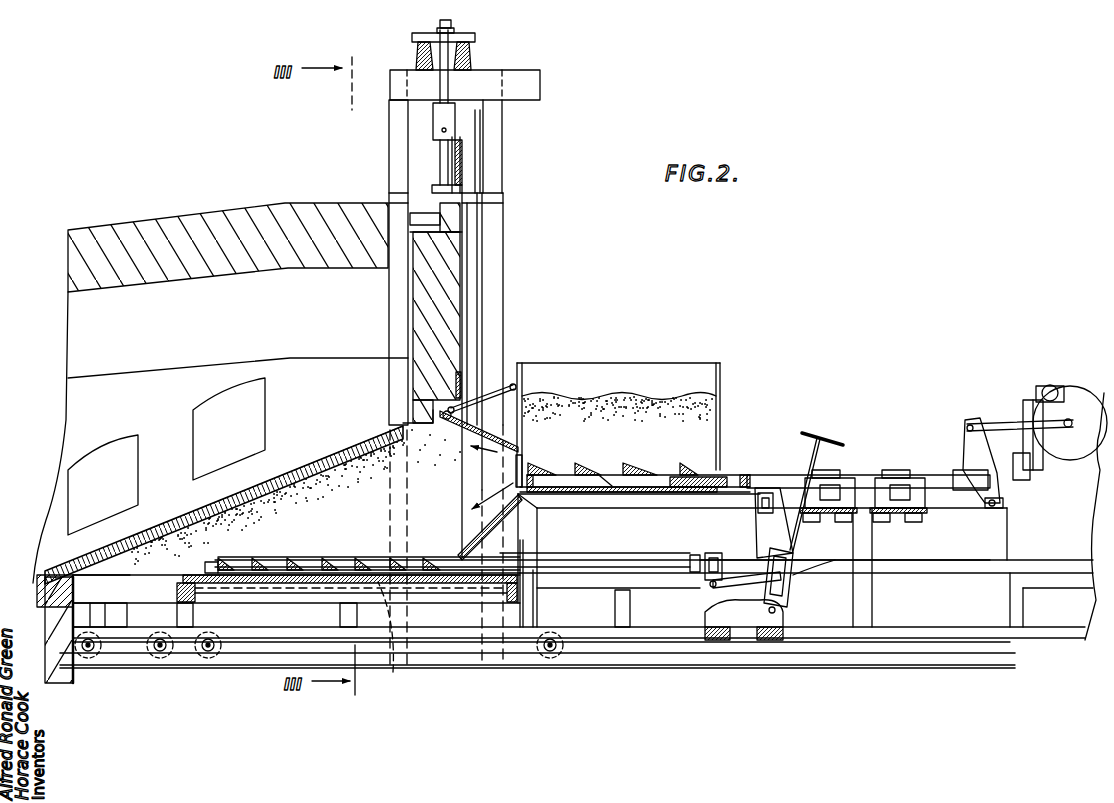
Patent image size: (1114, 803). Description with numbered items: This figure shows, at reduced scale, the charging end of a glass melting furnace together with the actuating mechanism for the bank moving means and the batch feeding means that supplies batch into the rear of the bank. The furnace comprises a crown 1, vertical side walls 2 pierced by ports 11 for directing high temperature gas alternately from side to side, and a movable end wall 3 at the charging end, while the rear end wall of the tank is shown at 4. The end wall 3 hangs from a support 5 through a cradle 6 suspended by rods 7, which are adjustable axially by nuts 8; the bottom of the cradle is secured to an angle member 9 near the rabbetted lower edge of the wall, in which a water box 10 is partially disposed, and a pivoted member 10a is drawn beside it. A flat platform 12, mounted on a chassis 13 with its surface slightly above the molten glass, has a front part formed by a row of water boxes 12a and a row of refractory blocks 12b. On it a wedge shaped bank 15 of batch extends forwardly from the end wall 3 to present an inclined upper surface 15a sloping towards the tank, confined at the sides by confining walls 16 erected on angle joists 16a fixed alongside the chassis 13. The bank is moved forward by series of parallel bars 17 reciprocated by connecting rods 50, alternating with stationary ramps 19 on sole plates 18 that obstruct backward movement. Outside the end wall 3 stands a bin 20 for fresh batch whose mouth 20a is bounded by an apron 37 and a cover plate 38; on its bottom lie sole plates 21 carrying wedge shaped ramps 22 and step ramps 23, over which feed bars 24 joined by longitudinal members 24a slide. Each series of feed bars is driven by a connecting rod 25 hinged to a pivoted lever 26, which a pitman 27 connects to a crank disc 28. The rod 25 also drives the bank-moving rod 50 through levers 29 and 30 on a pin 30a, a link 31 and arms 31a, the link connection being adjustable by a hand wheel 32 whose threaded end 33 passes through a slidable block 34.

The crown 1 is at (200, 268).
The vertical side walls 2 is at (220, 437).
The movable end wall 3 is at (418, 300).
The rear end wall 4 is at (60, 617).
The support 5 is at (498, 70).
The cradle 6 is at (470, 210).
The rods 7 is at (441, 85).
The nuts 8 is at (455, 25).
The angle member 9 is at (458, 386).
The water box 10 is at (450, 438).
The link 10a is at (493, 393).
The ports 11 is at (166, 456).
The platform 12 is at (380, 592).
The water boxes 12a is at (140, 551).
The refractory blocks 12b is at (48, 577).
The chassis 13 is at (292, 635).
The bank 15 is at (296, 497).
The upper surface 15a is at (307, 478).
The confining walls 16 is at (201, 513).
The angle joists 16a is at (393, 637).
The bars 17 is at (222, 562).
The sole plate 18 is at (210, 568).
The stationary ramps 19 is at (256, 562).
The bin 20 is at (618, 425).
The mouth 20a is at (519, 470).
The sole plates 21 is at (614, 494).
The ramp 22 is at (599, 474).
The ramp 23 is at (673, 478).
The feed bars 24 is at (541, 472).
The longitudinal members 24a is at (604, 476).
The connecting rod 25 is at (764, 486).
The pivoted lever 26 is at (967, 448).
The pitman 27 is at (995, 422).
The crank disc 28 is at (1082, 405).
The lever 29 is at (768, 542).
The lever 30 is at (787, 580).
The pin 30a is at (778, 610).
The link 31 is at (747, 585).
The arms 31a is at (710, 597).
The hand wheel 32 is at (832, 429).
The threaded end 33 is at (797, 529).
The slidable block 34 is at (796, 576).
The apron 37 is at (491, 525).
The cover plate 38 is at (472, 450).
The connecting rod 50 is at (627, 560).